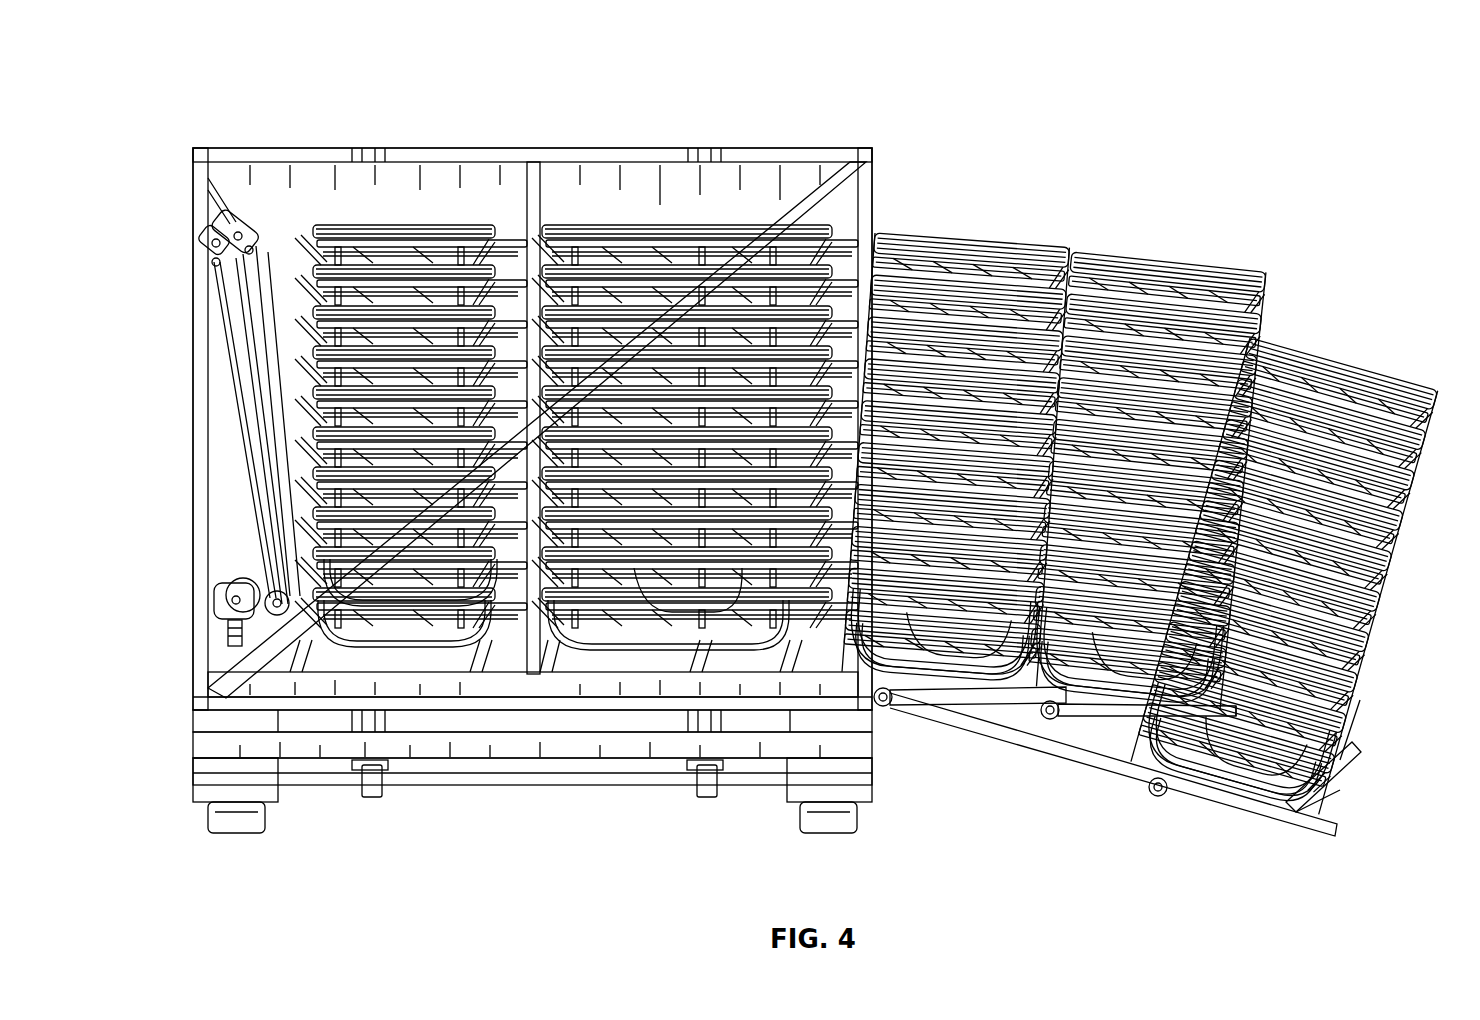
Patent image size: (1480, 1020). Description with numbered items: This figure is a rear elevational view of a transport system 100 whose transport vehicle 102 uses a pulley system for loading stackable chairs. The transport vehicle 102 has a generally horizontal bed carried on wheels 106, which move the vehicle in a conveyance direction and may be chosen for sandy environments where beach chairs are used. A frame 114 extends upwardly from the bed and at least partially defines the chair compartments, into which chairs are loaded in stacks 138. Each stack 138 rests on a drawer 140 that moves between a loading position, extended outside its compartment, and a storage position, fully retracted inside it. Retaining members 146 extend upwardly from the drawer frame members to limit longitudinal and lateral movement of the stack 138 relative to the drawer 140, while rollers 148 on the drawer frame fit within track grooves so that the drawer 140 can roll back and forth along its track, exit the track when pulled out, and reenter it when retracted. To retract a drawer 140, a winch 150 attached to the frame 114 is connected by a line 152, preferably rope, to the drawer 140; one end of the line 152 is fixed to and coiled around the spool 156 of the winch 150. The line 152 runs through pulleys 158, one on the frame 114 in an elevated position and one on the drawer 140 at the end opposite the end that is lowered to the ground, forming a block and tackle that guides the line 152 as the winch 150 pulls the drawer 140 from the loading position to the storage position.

The transport system 100 is at (194, 92).
The transport vehicle 102 is at (180, 728).
The wheels 106 is at (238, 834).
The frame 114 is at (260, 148).
The stack of chairs 138 is at (654, 222).
The drawer 140 is at (1285, 830).
The retaining member 146 is at (1326, 800).
The rollers 148 is at (1160, 798).
The winch 150 is at (220, 600).
The line 152 is at (262, 235).
The spool 156 is at (218, 570).
The pulleys 158 is at (212, 250).